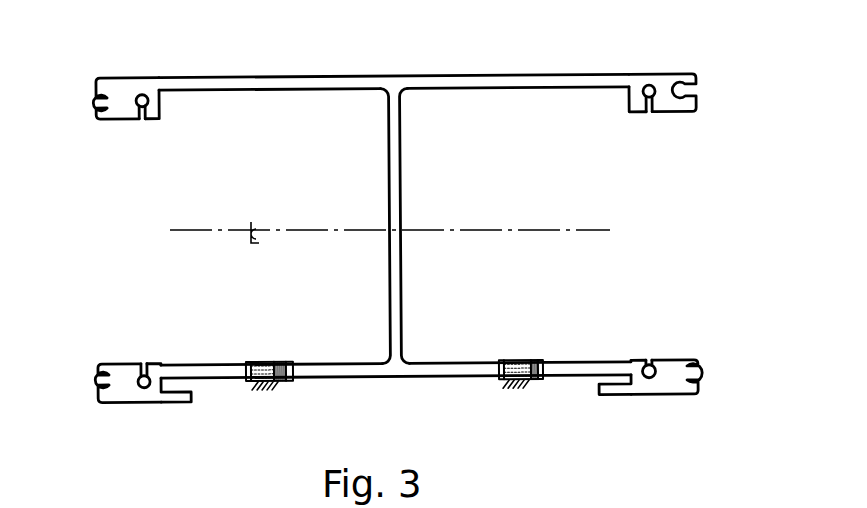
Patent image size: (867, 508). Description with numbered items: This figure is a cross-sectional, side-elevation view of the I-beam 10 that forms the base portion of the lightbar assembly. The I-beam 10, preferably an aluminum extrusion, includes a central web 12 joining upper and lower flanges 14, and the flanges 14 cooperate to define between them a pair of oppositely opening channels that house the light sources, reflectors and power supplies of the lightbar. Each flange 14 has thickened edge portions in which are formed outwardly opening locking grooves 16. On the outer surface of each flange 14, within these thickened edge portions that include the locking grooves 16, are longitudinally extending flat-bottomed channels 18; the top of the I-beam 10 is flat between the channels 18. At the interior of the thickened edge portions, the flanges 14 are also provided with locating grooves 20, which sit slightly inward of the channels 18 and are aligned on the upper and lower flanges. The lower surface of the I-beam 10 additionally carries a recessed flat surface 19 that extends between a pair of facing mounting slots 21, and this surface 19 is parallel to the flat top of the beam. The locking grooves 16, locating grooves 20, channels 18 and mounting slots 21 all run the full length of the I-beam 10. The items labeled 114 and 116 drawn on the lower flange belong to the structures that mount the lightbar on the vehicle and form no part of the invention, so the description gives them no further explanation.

The I-beam 10 is at (520, 55).
The web 12 is at (400, 183).
The flanges 14 is at (282, 77).
The locking grooves 16 is at (96, 107).
The flat-bottomed channels 18 is at (130, 78).
The recessed flat surface 19 is at (443, 376).
The locating grooves 20 is at (142, 115).
The mounting slots 21 is at (191, 386).
The panel 114 is at (290, 383).
The fastener insert 116 is at (281, 361).